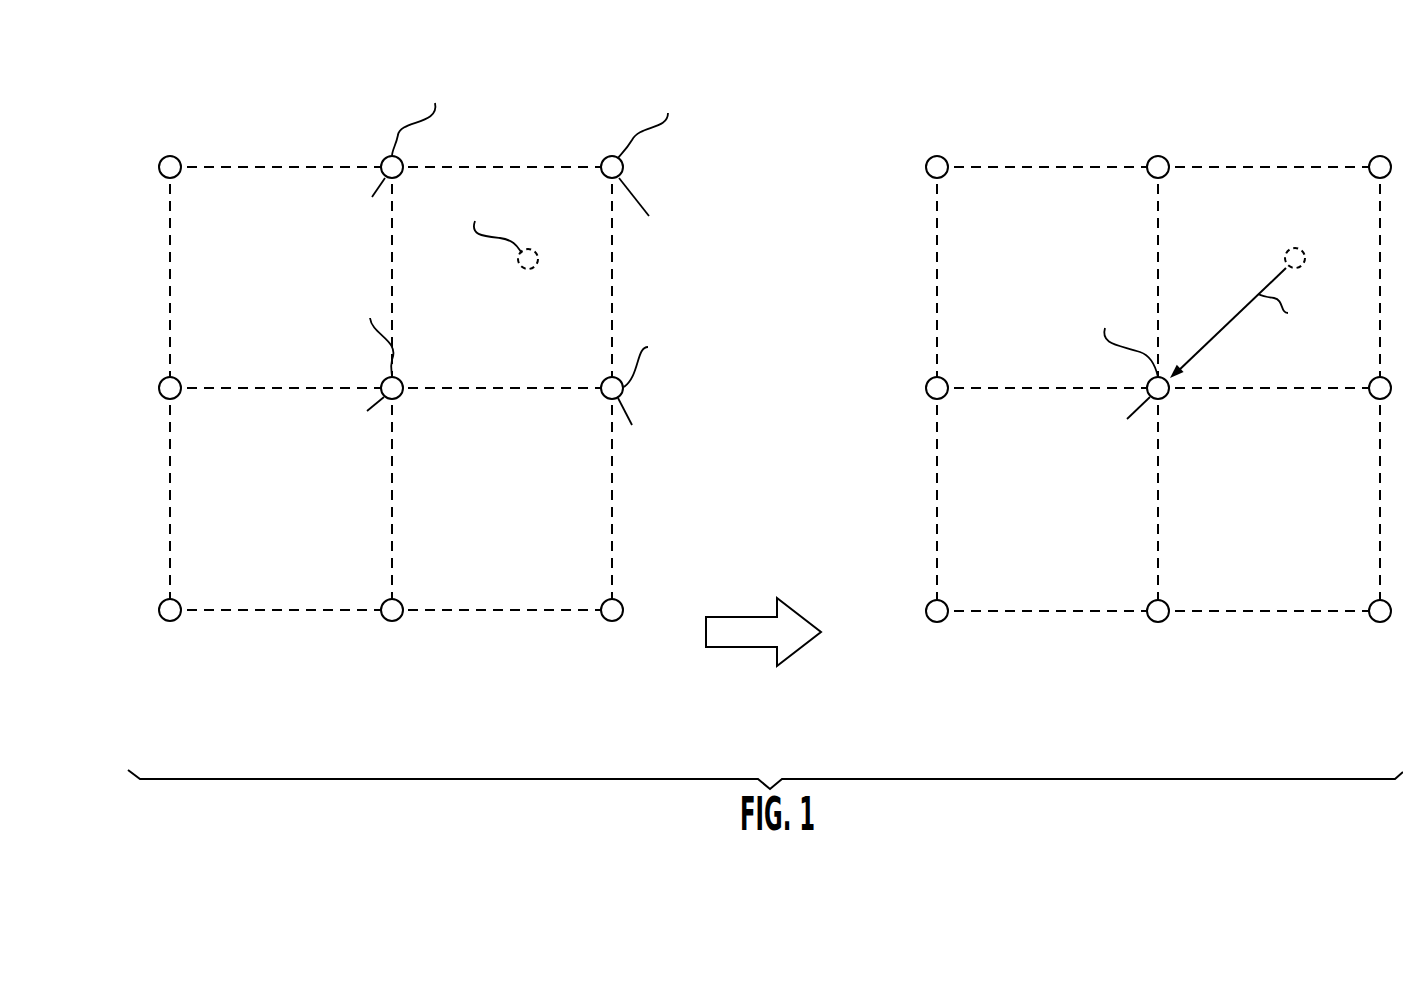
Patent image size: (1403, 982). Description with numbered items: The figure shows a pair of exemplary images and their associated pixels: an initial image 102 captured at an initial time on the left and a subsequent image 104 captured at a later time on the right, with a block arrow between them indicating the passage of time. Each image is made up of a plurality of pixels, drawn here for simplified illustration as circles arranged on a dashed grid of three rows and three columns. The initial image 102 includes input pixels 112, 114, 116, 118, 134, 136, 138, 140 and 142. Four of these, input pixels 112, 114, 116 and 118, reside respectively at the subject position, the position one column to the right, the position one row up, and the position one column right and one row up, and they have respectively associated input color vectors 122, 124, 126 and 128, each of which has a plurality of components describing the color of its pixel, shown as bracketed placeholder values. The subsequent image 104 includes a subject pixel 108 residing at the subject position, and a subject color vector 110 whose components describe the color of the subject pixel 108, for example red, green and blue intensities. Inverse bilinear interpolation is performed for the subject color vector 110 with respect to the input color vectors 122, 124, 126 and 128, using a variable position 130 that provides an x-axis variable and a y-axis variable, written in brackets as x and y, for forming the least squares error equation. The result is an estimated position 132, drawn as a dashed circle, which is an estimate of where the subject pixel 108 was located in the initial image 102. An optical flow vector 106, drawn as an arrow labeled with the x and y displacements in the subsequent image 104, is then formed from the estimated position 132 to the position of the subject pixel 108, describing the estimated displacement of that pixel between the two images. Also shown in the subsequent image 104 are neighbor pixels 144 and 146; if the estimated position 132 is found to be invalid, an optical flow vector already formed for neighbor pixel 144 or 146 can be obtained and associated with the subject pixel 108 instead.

The initial image 102 is at (427, 414).
The subsequent image 104 is at (1158, 455).
The optical flow vector 106 is at (1236, 321).
The subject pixel 108 is at (1148, 386).
The subject color vector 110 is at (1112, 445).
The input pixel 112 is at (382, 387).
The input pixel 114 is at (601, 387).
The input pixel 116 is at (382, 166).
The input pixel 118 is at (624, 168).
The input color vector 122 is at (334, 440).
The input color vector 124 is at (664, 448).
The input color vector 126 is at (338, 222).
The input color vector 128 is at (692, 238).
The variable position 130 is at (534, 252).
The estimated position 132 is at (539, 259).
The input pixel 134 is at (603, 608).
The input pixel 136 is at (382, 608).
The input pixel 138 is at (160, 608).
The input pixel 140 is at (160, 387).
The input pixel 142 is at (160, 166).
The neighbor pixel 144 is at (1166, 604).
The neighbor pixel 146 is at (1372, 605).